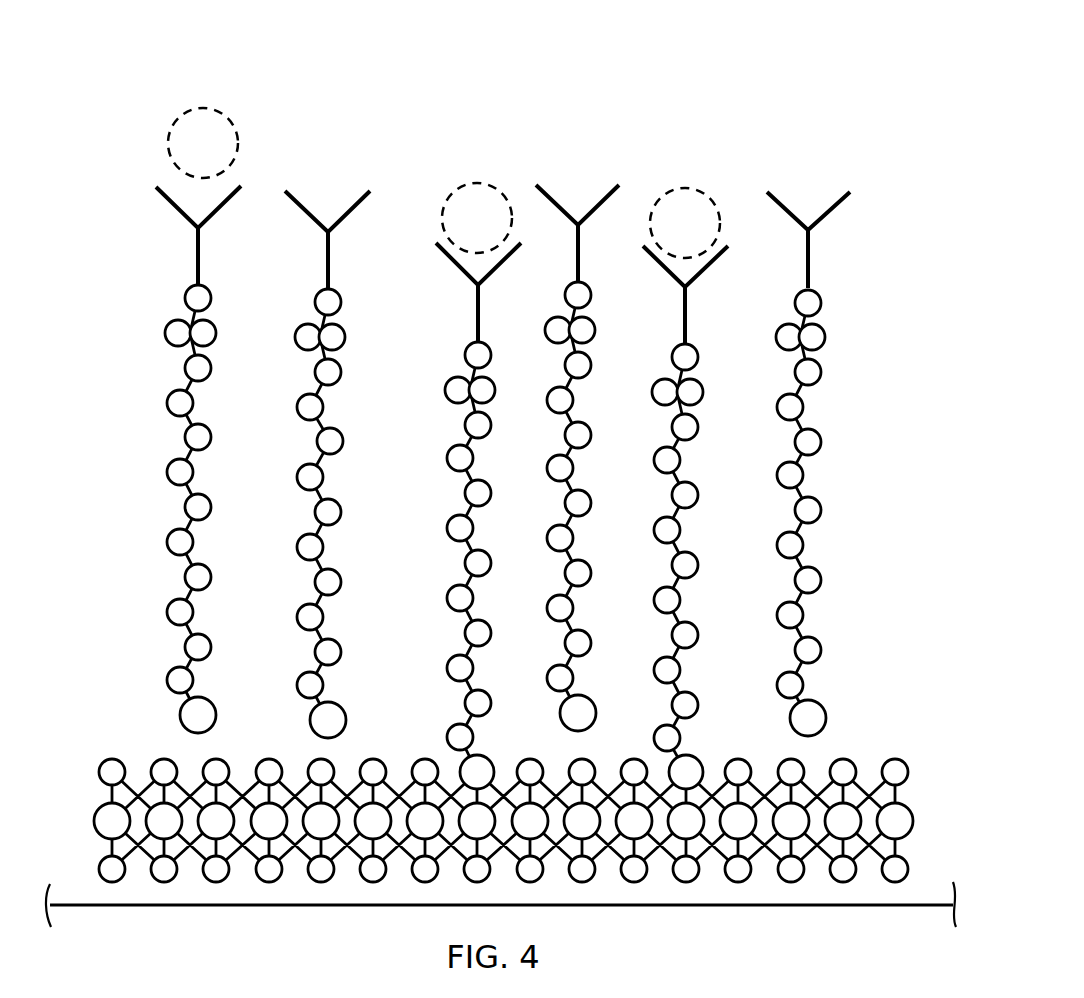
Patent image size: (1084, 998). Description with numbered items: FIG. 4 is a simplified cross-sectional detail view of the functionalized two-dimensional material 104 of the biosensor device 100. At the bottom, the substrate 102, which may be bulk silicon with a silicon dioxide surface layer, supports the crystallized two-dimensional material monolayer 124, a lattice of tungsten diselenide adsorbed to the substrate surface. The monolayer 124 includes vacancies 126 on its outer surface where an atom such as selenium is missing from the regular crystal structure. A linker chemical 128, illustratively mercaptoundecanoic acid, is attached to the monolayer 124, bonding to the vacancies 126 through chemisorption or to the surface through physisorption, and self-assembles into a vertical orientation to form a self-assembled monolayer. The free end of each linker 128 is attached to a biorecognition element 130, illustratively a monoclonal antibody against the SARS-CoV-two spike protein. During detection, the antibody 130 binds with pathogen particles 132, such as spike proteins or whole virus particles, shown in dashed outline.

The biosensor device 100 is at (902, 92).
The substrate 102 is at (913, 922).
The functionalized metal chalcogenide 2D material 104 is at (122, 138).
The crystallized 2D material monolayer 124 is at (107, 727).
The vacancies 126 is at (450, 763).
The linker chemical 128 is at (110, 470).
The biorecognition element 130 is at (145, 243).
The pathogen particles 132 is at (210, 110).